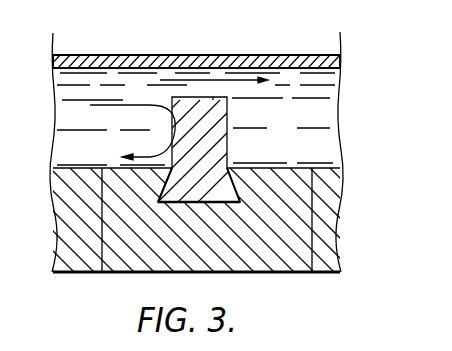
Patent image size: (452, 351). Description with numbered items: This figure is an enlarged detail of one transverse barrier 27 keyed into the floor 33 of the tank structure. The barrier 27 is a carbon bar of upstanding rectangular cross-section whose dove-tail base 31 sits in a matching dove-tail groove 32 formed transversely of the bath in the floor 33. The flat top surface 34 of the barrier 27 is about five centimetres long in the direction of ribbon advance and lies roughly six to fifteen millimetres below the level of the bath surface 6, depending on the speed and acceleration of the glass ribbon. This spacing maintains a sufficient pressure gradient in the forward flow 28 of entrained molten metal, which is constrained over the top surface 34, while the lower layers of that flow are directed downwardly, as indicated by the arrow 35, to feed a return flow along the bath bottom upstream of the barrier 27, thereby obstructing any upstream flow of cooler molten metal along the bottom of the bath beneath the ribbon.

The bath surface 6 is at (323, 78).
The barrier 27 is at (216, 119).
The forward flow 28 is at (183, 80).
The dove-tail base 31 is at (172, 206).
The dove-tail groove 32 is at (235, 200).
The floor 33 is at (330, 228).
The top surface 34 is at (213, 97).
The arrow 35 is at (150, 104).